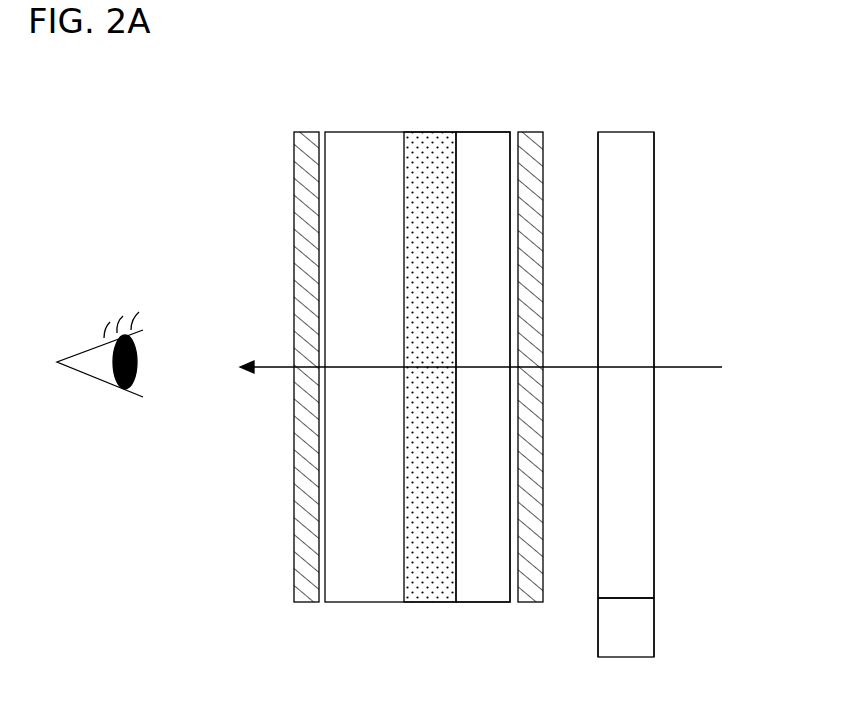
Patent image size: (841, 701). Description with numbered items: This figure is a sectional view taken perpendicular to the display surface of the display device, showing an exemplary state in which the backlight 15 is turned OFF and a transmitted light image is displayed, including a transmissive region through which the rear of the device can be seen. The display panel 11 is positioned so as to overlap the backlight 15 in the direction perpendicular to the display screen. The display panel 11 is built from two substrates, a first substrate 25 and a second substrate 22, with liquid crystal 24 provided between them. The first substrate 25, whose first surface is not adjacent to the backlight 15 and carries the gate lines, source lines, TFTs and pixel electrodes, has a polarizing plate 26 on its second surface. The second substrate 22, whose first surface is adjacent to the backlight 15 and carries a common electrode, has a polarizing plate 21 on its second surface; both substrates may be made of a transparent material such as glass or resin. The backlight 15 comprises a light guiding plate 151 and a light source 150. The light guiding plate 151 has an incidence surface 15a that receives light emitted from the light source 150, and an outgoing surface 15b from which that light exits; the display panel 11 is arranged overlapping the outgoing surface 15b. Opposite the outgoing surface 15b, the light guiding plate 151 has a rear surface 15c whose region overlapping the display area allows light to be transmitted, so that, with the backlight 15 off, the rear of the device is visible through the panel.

The display panel 11 is at (295, 126).
The backlight 15 is at (599, 126).
The incidence surface 15a is at (635, 598).
The outgoing surface 15b is at (598, 262).
The rear surface 15c is at (656, 262).
The light source 150 is at (653, 622).
The light guiding plate 151 is at (645, 497).
The polarizing plate 21 is at (305, 602).
The second substrate 22 is at (367, 602).
The liquid crystal 24 is at (432, 602).
The first substrate 25 is at (483, 602).
The polarizing plate 26 is at (529, 602).